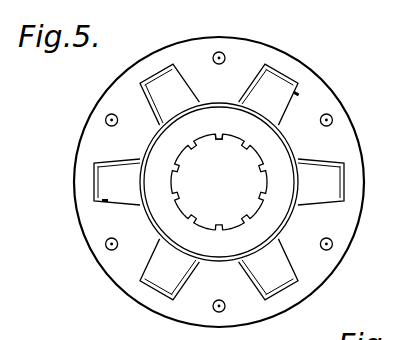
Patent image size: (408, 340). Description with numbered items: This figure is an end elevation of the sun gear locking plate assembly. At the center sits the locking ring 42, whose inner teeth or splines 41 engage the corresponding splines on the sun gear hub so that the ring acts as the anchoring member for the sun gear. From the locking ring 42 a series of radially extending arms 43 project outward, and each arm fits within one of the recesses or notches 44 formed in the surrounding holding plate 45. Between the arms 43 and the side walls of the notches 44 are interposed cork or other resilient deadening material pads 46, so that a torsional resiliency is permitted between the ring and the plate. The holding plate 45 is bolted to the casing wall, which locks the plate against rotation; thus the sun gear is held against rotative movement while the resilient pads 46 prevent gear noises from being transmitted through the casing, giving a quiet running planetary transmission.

The teeth or splines 41 is at (265, 173).
The locking ring 42 is at (210, 123).
The radially extending arms 43 is at (281, 83).
The recesses or notches 44 is at (297, 95).
The holding plate 45 is at (347, 135).
The cork or resilient deadening material pads 46 is at (147, 268).